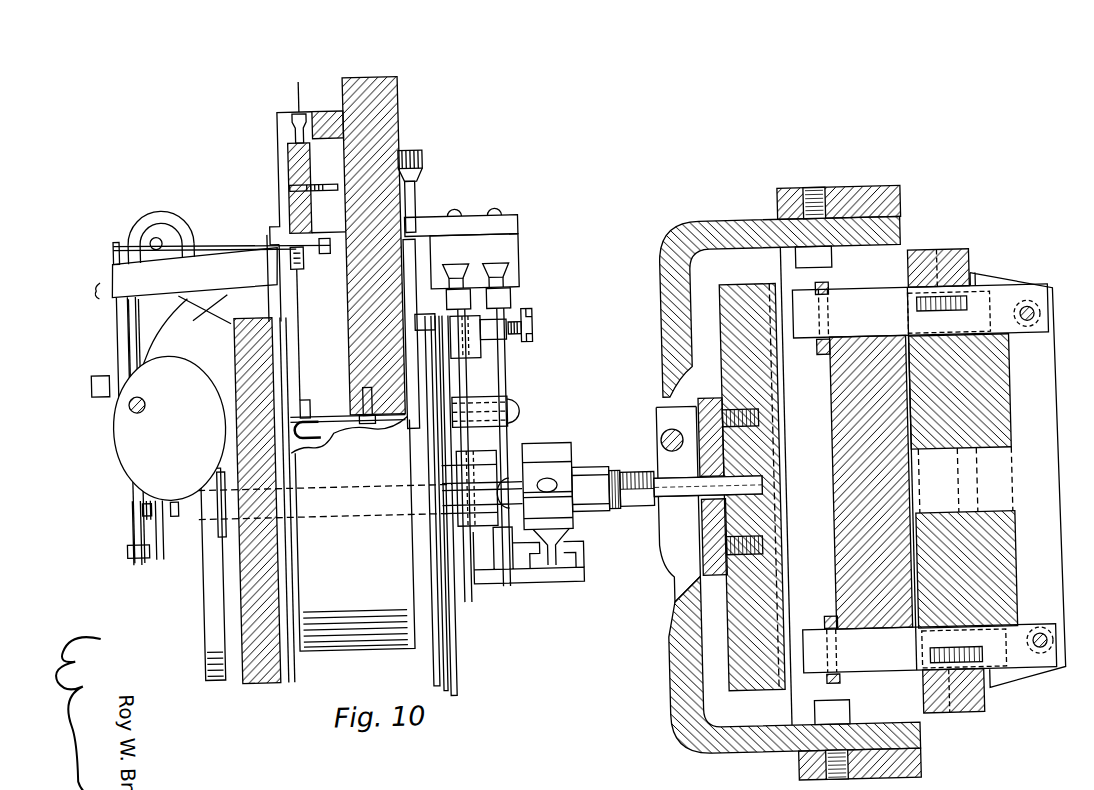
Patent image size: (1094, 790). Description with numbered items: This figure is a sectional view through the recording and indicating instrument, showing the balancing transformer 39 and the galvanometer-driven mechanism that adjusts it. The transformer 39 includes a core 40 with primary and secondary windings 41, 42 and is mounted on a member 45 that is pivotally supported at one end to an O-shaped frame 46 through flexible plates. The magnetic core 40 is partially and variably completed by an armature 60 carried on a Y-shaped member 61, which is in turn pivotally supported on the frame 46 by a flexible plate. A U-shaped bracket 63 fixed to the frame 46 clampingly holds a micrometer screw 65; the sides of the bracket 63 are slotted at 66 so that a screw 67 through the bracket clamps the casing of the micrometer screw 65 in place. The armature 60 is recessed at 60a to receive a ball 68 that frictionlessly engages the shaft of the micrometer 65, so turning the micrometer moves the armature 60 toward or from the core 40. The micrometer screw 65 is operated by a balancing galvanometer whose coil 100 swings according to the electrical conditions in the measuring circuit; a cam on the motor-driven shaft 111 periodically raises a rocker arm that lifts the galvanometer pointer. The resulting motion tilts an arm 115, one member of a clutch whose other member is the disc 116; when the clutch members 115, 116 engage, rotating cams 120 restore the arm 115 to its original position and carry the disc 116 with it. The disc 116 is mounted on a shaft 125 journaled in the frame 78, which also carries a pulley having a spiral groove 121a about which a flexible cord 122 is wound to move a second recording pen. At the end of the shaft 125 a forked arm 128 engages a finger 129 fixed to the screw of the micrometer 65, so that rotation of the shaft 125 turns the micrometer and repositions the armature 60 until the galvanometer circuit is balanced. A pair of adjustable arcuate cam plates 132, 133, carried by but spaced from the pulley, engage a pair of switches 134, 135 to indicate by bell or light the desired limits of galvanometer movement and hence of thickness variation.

The balancing transformer 39 is at (1050, 323).
The core 40 is at (1055, 421).
The primary winding 41 is at (840, 386).
The secondary winding 42 is at (987, 394).
The member 45 is at (942, 259).
The O-shaped frame 46 is at (900, 198).
The armature 60 is at (731, 289).
The recess 60a is at (758, 522).
The Y-shaped member 61 is at (658, 410).
The U-shaped bracket 63 is at (722, 234).
The micrometer screw 65 is at (590, 467).
The slot 66 is at (770, 649).
The screw 67 is at (660, 443).
The ball 68 is at (757, 488).
The frame 78 is at (244, 666).
The galvanometer coil 100 is at (296, 138).
The motor-driven shaft 111 is at (130, 397).
The arm 115 is at (172, 508).
The disc 116 is at (199, 623).
The cams 120 is at (113, 448).
The spiral groove 121a is at (451, 605).
The flexible cord 122 is at (455, 683).
The shaft 125 is at (228, 518).
The forked arm 128 is at (533, 582).
The finger 129 is at (558, 541).
The arcuate cam plate 132 is at (503, 358).
The arcuate cam plate 133 is at (466, 379).
The switch 134 is at (508, 265).
The switch 135 is at (457, 257).